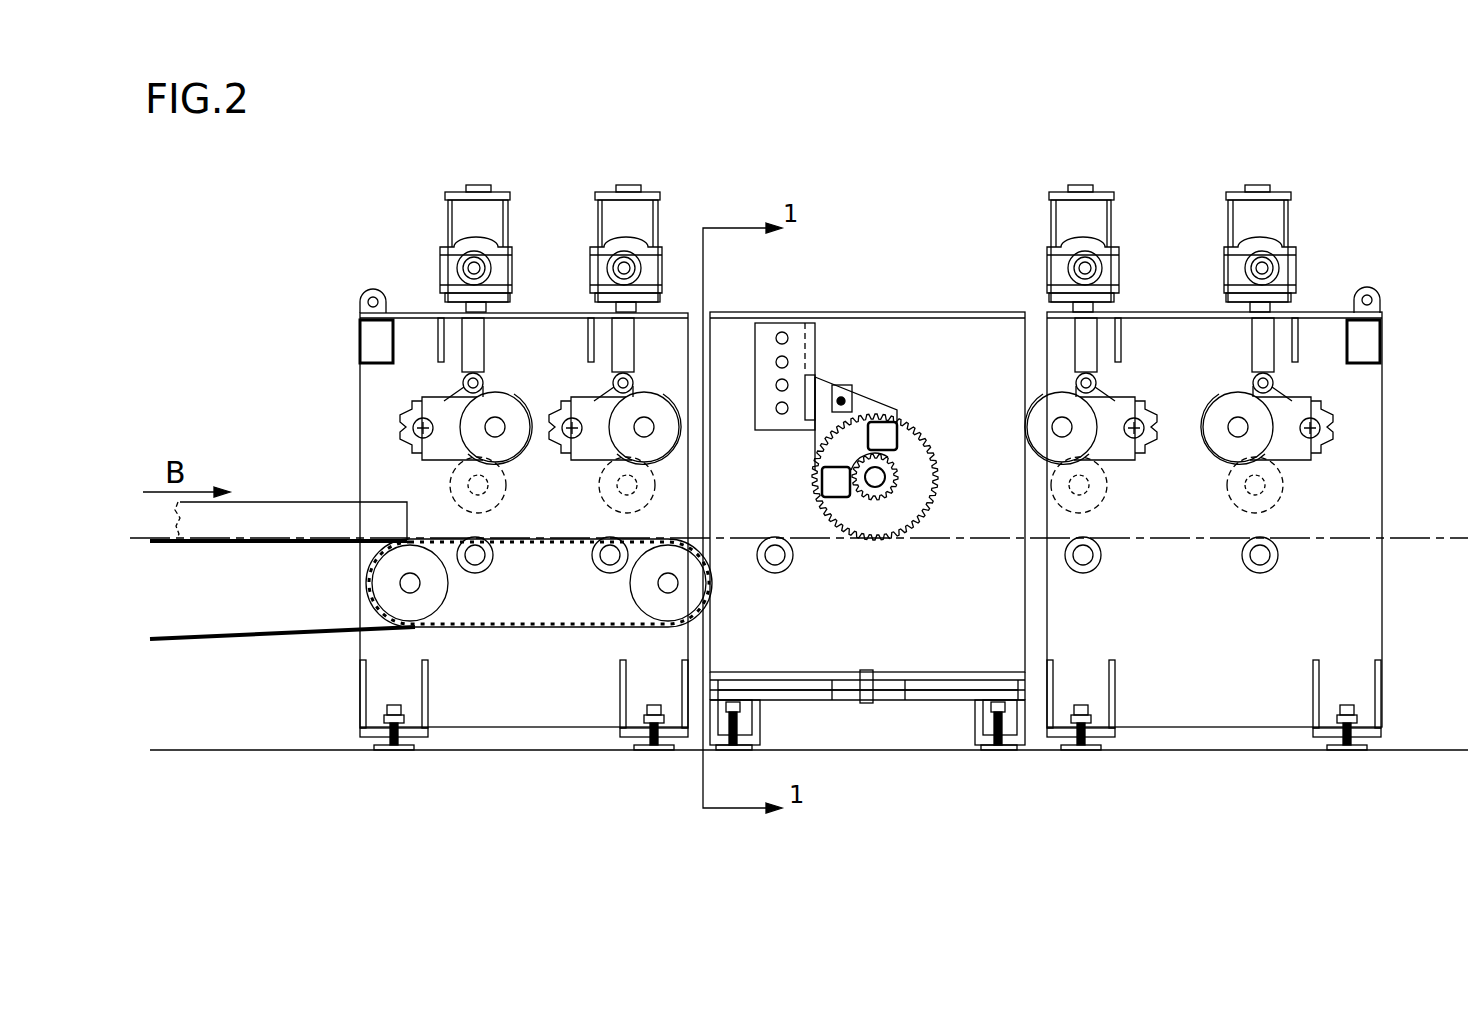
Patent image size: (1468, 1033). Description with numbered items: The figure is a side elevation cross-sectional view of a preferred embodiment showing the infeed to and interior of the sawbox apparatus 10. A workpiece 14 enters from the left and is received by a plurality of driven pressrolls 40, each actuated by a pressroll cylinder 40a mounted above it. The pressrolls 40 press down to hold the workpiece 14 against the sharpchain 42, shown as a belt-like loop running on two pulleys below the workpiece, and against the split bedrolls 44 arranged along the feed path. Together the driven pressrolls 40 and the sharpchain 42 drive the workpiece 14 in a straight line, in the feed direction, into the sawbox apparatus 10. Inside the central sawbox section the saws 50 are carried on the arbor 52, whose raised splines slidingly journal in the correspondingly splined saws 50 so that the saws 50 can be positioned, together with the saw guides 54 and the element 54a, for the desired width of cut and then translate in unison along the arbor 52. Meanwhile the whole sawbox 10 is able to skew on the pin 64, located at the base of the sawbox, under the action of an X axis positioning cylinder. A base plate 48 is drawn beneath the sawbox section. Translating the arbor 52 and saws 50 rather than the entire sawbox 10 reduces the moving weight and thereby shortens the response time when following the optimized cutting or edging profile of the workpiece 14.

The sawbox apparatus 10 is at (830, 225).
The workpiece 14 is at (310, 515).
The driven pressrolls 40 is at (498, 393).
The pressroll cylinders 40a is at (487, 222).
The sharpchain 42 is at (505, 627).
The split bedrolls 44 is at (485, 572).
The base plate 48 is at (765, 688).
The saws 50 is at (918, 488).
The arbor 52 is at (893, 468).
The saw guides 54 is at (863, 398).
The terminal block 54a is at (812, 362).
The pin 64 is at (864, 705).